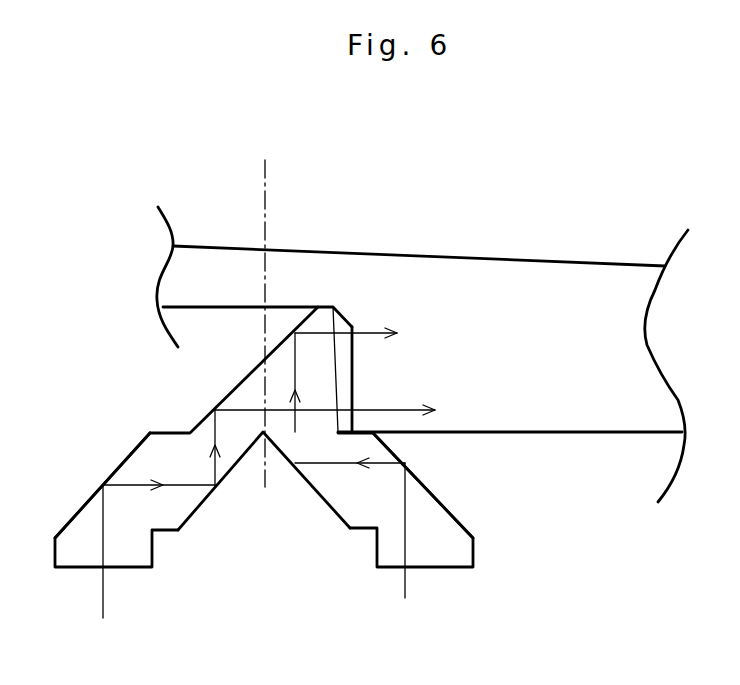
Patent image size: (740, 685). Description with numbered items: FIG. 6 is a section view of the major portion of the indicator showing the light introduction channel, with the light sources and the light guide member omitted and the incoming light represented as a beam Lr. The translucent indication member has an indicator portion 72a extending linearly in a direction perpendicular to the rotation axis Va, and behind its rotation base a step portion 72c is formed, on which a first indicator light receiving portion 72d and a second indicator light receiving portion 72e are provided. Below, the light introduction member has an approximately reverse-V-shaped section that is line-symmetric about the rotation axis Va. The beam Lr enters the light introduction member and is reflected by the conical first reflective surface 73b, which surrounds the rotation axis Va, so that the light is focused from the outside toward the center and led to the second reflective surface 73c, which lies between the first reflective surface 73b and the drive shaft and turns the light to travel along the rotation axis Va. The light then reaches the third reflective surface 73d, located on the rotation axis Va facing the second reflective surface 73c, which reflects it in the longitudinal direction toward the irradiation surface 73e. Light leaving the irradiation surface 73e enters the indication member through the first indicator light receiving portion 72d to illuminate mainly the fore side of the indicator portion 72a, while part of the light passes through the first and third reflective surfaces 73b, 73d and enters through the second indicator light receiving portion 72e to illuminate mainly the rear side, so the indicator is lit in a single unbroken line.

The indicator portion 72a is at (567, 280).
The step portion 72c is at (235, 322).
The first indicator light receiving portion 72d is at (352, 373).
The second indicator light receiving portion 72e is at (242, 305).
The first reflective surface 73b is at (118, 465).
The second reflective surface 73c is at (313, 488).
The third reflective surface 73d is at (237, 387).
The irradiation surface 73e is at (341, 338).
The rotation axis Va is at (274, 302).
The beam Lr is at (257, 556).